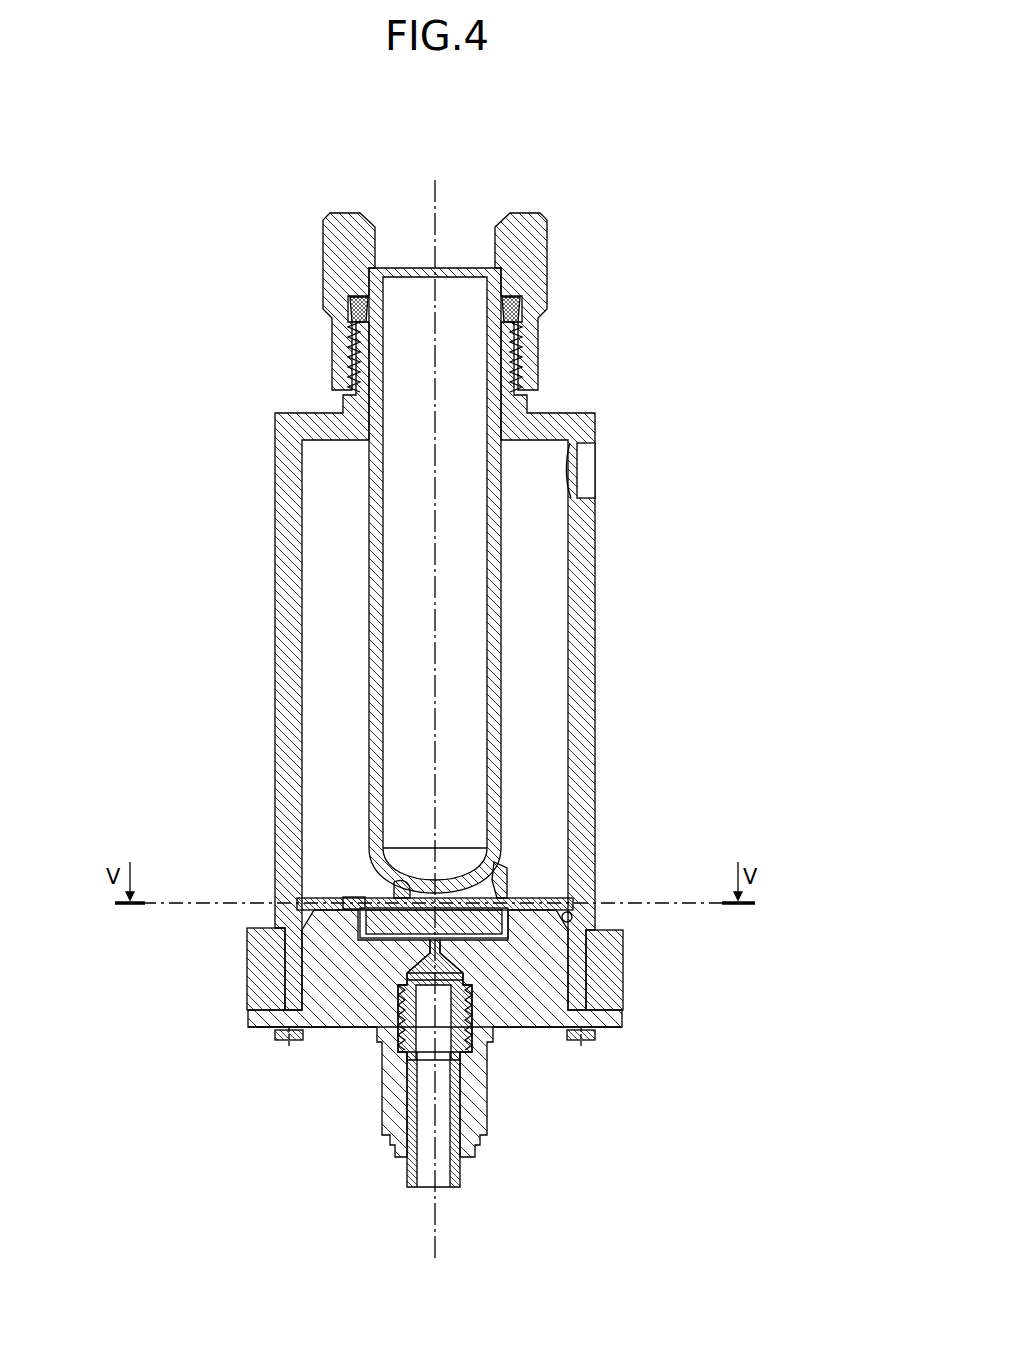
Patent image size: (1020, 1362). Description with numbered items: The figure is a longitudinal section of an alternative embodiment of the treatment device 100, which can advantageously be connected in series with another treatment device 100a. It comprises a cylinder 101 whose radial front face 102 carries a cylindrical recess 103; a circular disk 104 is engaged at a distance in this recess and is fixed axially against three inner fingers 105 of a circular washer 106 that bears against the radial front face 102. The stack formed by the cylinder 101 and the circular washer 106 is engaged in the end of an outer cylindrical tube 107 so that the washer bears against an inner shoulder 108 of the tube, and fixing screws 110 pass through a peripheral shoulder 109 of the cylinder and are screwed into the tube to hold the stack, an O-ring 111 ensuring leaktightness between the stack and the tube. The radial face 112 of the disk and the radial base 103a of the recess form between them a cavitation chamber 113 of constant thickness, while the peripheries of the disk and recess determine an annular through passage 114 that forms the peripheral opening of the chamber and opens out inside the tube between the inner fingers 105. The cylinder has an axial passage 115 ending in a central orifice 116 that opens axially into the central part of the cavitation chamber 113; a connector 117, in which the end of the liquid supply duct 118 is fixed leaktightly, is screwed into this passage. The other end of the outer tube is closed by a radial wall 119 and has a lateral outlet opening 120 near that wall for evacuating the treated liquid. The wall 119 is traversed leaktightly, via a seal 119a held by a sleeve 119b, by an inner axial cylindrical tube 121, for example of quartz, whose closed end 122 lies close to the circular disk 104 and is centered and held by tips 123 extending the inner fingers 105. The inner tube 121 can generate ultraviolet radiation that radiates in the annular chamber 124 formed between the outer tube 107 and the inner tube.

The treatment device 100 is at (435, 583).
The other treatment device 100a is at (505, 568).
The cylinder 101 is at (316, 983).
The radial front face 102 is at (323, 898).
The cylindrical recess 103 is at (348, 928).
The radial base 103a is at (506, 940).
The circular disk 104 is at (470, 850).
The inner fingers 105 is at (363, 898).
The circular washer 106 is at (570, 898).
The outer cylindrical tube 107 is at (429, 666).
The inner shoulder 108 is at (298, 900).
The peripheral shoulder 109 is at (252, 1021).
The fixing screws 110 is at (288, 1043).
The O-ring 111 is at (573, 917).
The radial face 112 is at (375, 898).
The cavitation chamber 113 is at (375, 947).
The annular through passage 114 is at (505, 922).
The axial passage 115 is at (462, 952).
The central orifice 116 is at (431, 948).
The connector 117 is at (475, 1100).
The duct 118 is at (408, 1183).
The radial wall 119 is at (434, 316).
The seal 119a is at (507, 302).
The sleeve 119b is at (337, 262).
The lateral outlet opening 120 is at (584, 468).
The inner axial cylindrical tube 121 is at (376, 517).
The closed end 122 is at (490, 800).
The tips 123 is at (500, 852).
The annular chamber 124 is at (328, 588).